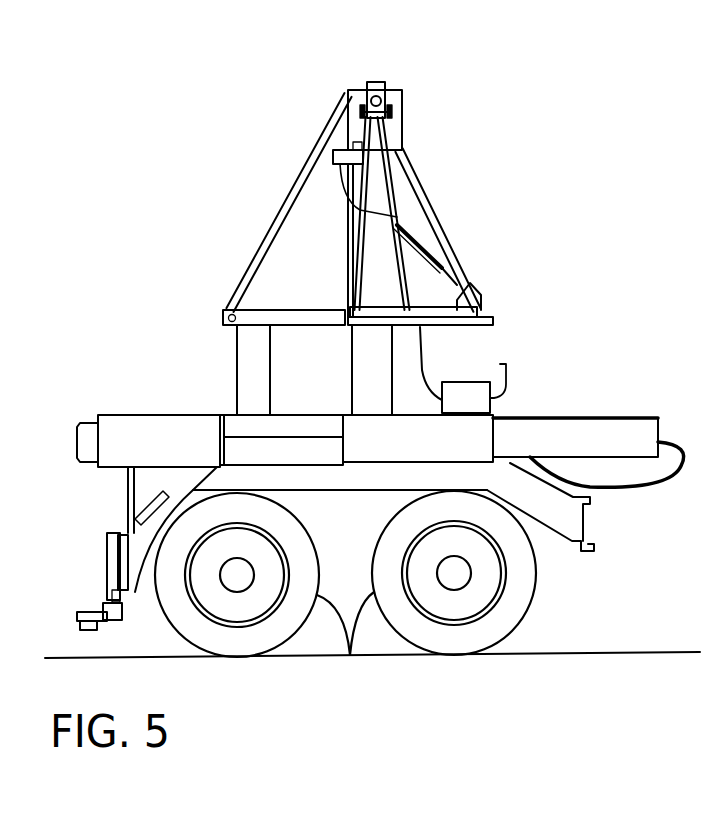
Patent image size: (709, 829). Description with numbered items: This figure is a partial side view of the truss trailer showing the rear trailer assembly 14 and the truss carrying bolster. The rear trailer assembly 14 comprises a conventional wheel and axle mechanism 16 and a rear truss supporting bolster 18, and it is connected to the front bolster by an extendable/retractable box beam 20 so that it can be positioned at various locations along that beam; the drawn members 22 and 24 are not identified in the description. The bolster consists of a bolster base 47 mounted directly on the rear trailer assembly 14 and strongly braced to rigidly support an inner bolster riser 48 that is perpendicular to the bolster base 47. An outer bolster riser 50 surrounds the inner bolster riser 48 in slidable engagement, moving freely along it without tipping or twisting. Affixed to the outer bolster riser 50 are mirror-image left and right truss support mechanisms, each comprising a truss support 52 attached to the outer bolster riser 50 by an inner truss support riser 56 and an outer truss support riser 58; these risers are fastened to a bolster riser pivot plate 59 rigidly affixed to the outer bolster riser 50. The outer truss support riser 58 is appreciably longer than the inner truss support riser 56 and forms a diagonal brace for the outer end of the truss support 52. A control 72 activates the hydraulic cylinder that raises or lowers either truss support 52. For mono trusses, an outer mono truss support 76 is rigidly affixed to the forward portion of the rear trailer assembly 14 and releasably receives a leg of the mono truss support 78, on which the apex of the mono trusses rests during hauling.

The rear trailer assembly 14 is at (577, 497).
The wheel and axle mechanism 16 is at (350, 655).
The rear truss supporting bolster 18 is at (392, 90).
The extendable/retractable box beam 20 is at (139, 403).
The tongue beam 22 is at (153, 413).
The rear boom 24 is at (587, 417).
The bolster base 47 is at (407, 410).
The inner bolster riser 48 is at (385, 338).
The outer bolster riser 50 is at (402, 110).
The truss support 52 is at (372, 95).
The inner truss support riser 56 is at (388, 178).
The outer truss support riser 58 is at (427, 212).
The bolster riser pivot plate 59 is at (473, 293).
The control 72 is at (508, 372).
The outer mono truss support 76 is at (107, 562).
The mono truss support 78 is at (77, 617).